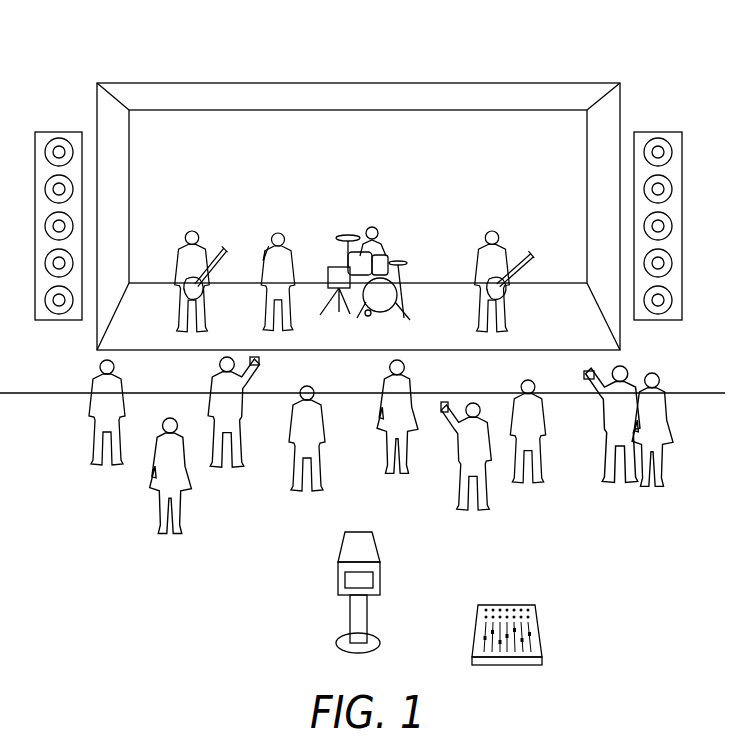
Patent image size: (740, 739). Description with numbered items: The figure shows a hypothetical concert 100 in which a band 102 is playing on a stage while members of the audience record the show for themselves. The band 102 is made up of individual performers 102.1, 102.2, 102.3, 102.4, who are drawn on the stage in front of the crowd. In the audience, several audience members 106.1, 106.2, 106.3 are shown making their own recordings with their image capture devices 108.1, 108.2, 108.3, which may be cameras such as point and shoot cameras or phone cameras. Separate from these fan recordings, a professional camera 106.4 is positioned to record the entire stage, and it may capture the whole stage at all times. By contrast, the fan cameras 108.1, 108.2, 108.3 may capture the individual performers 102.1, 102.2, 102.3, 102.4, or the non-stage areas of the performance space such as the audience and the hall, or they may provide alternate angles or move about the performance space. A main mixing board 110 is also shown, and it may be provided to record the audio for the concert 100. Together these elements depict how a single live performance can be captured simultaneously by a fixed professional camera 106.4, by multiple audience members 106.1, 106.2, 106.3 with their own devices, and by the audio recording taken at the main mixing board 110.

The concert 100 is at (652, 44).
The band 102 is at (516, 141).
The performer 102.1 is at (195, 230).
The performer 102.2 is at (282, 232).
The performer 102.3 is at (376, 227).
The performer 102.4 is at (500, 230).
The audience member 106.1 is at (222, 375).
The audience member 106.2 is at (468, 401).
The audience member 106.3 is at (624, 370).
The professional camera 106.4 is at (358, 580).
The image capture device 108.1 is at (256, 366).
The image capture device 108.2 is at (443, 412).
The image capture device 108.3 is at (588, 380).
The main mixing board 110 is at (547, 637).